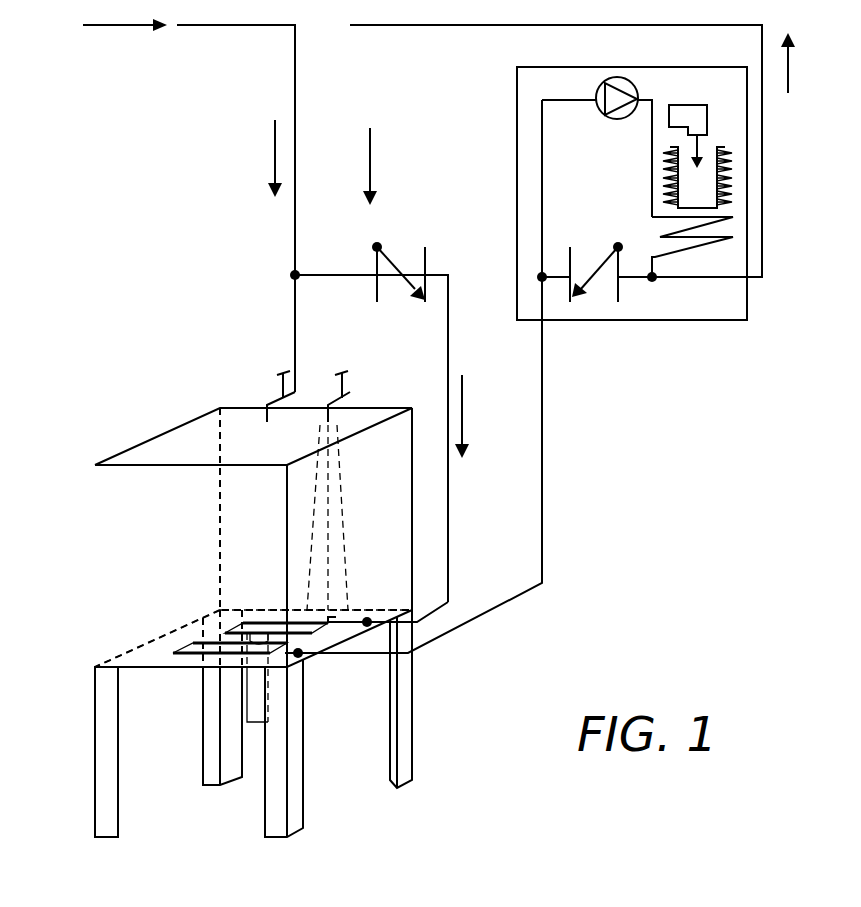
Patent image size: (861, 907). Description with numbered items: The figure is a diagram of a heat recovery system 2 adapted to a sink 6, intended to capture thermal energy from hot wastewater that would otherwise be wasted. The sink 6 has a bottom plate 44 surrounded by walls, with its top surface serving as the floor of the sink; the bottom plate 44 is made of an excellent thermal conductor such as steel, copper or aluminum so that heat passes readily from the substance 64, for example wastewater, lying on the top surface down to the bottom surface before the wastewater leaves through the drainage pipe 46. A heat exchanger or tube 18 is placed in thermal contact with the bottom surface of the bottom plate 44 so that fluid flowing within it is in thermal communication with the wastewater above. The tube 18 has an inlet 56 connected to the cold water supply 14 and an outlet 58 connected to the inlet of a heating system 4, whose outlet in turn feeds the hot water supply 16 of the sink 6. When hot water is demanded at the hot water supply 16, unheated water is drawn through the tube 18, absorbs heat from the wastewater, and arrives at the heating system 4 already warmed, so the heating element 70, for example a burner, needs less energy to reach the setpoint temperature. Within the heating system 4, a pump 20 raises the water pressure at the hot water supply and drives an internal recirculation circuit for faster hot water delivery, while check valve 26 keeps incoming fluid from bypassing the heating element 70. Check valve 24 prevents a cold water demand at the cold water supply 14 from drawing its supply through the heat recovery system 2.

The heat recovery system 2 is at (608, 468).
The heating system 4 is at (657, 320).
The sink 6 is at (93, 523).
The cold water supply 14 is at (290, 370).
The hot water supply 16 is at (340, 363).
The heat exchanger or tube 18 is at (187, 657).
The pump 20 is at (600, 119).
The check valve 24 is at (425, 247).
The check valve 26 is at (570, 247).
The bottom plate 44 is at (148, 657).
The drainage pipe 46 is at (250, 707).
The inlet of heat exchanger 56 is at (366, 618).
The outlet of heat exchanger 58 is at (300, 658).
The substance 64 is at (333, 617).
The heating element 70 is at (727, 147).